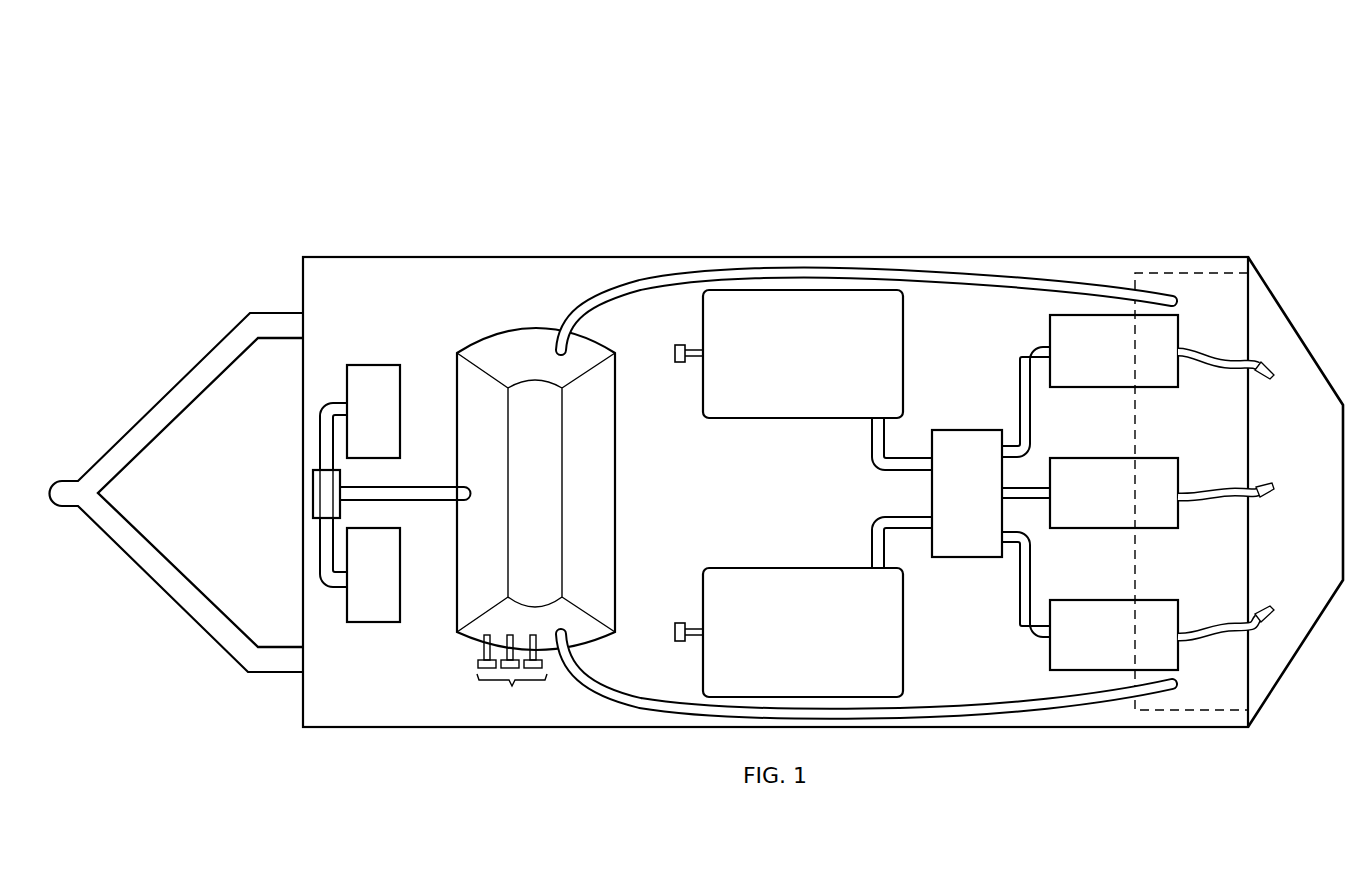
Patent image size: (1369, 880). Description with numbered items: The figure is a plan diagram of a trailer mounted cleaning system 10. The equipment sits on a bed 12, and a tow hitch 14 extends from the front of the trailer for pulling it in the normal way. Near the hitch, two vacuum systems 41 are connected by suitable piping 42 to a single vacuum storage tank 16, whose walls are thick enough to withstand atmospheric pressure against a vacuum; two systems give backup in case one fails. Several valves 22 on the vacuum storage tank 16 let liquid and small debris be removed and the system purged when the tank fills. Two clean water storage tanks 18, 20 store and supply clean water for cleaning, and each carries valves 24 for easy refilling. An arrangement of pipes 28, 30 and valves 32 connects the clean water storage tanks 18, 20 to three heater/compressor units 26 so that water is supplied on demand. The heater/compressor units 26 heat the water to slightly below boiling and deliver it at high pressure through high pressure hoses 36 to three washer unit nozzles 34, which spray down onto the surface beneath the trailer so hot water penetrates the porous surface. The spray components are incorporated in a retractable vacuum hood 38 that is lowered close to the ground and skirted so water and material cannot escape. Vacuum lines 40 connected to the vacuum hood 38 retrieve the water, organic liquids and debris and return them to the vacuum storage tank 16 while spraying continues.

The trailer mounted cleaning system 10 is at (652, 162).
The bed 12 is at (455, 256).
The tow hitch 14 is at (183, 377).
The vacuum storage tank 16 is at (536, 489).
The clean water storage tank 18 is at (803, 354).
The clean water storage tank 20 is at (803, 632).
The valves 22 is at (512, 677).
The valves 24 is at (680, 364).
The heater/compressor units 26 is at (1114, 492).
The pipes 28 is at (870, 440).
The pipes 30 is at (1017, 487).
The valves 32 is at (962, 430).
The washer unit nozzles 34 is at (1273, 378).
The high pressure hoses 36 is at (1207, 350).
The retractable vacuum hood 38 is at (1313, 633).
The vacuum lines 40 is at (946, 283).
The vacuum systems 41 is at (372, 365).
The piping 42 is at (442, 487).